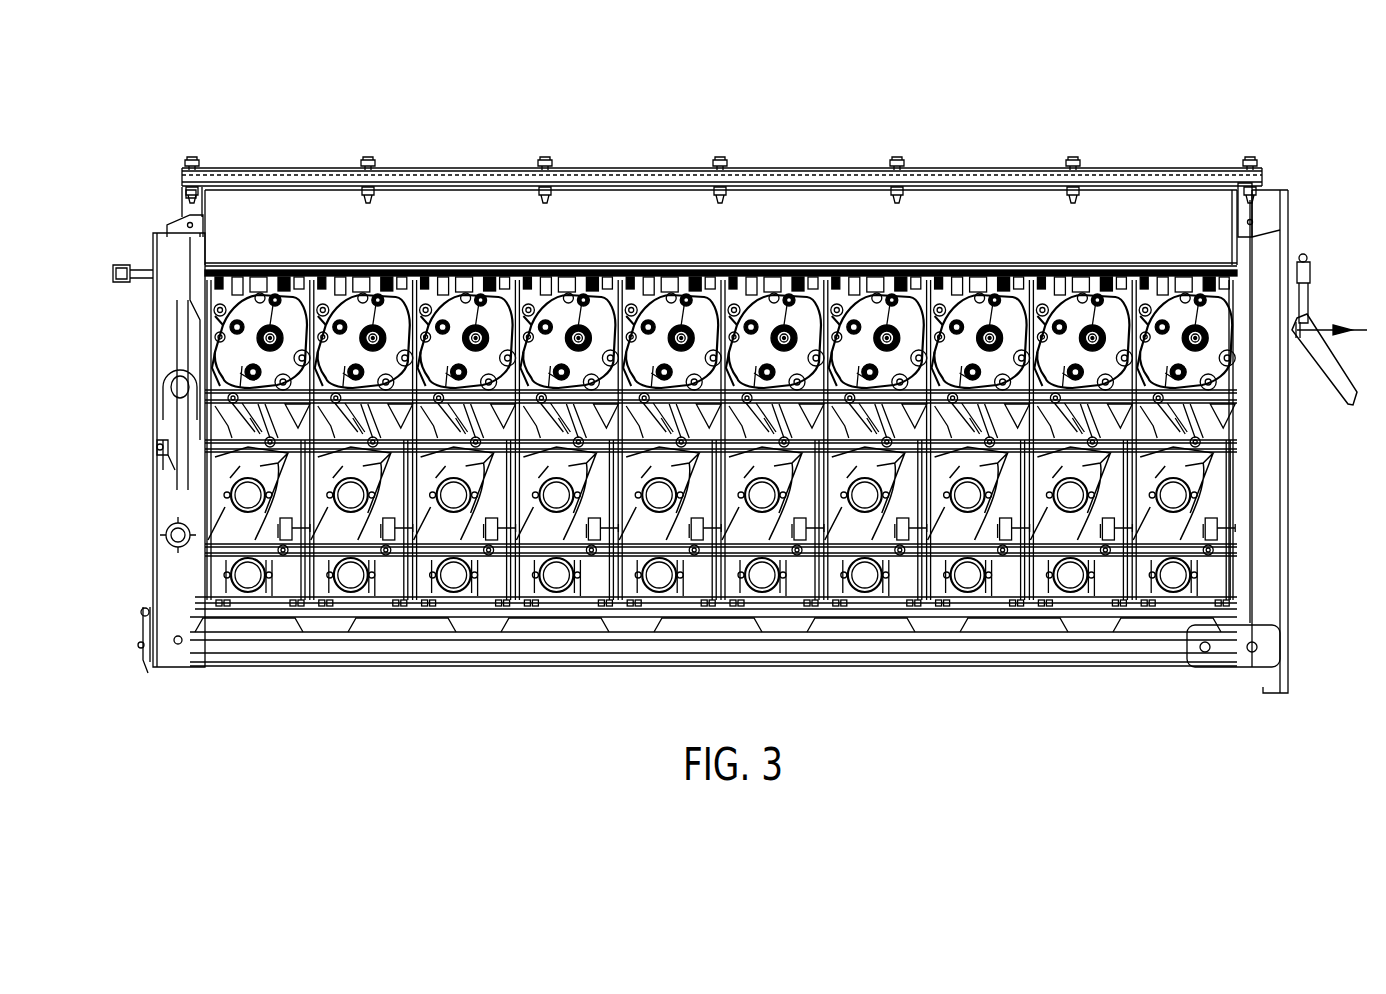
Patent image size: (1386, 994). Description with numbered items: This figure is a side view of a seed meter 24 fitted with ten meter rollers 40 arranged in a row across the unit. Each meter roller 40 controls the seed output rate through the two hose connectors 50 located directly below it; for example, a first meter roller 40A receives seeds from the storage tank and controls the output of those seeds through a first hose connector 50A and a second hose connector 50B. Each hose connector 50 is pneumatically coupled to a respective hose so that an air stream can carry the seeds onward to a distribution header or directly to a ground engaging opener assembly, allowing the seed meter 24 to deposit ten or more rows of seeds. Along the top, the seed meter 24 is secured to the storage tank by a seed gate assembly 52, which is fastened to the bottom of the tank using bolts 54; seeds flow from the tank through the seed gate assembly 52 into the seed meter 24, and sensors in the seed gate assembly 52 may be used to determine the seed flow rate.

The seed meter 24 is at (206, 134).
The meter rollers 40 is at (1195, 325).
The first meter roller 40A is at (270, 325).
The hose connectors 50 is at (1167, 578).
The first hose connector 50A is at (160, 447).
The second hose connector 50B is at (225, 583).
The seed gate assembly 52 is at (803, 168).
The bolts 54 is at (545, 158).